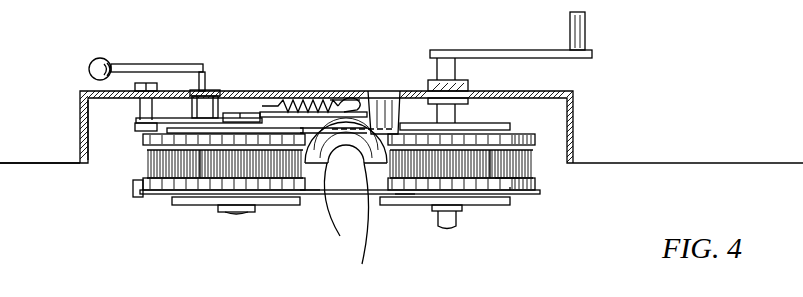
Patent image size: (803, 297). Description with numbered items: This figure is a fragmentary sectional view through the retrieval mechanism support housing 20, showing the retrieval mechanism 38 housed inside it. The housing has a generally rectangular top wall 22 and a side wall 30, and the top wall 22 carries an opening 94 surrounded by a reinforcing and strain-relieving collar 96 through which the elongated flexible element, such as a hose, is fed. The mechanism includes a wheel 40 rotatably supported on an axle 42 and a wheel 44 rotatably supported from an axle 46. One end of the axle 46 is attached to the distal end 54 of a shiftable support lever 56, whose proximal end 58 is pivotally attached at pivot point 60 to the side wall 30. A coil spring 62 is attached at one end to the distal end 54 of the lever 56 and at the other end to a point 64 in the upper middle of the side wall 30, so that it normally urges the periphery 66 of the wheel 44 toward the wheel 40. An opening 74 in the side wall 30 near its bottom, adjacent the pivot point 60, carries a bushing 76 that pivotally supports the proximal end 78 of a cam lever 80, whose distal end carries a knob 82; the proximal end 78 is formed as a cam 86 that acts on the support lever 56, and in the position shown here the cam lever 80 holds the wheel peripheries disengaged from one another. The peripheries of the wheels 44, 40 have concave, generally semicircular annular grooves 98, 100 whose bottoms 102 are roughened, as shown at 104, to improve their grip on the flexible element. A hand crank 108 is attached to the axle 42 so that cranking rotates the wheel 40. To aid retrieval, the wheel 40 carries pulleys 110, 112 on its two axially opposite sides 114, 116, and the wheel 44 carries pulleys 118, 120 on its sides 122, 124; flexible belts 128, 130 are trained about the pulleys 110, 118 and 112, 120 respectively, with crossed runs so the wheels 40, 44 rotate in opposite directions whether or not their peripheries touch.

The retrieval mechanism support housing 20 is at (578, 146).
The top wall 22 is at (381, 133).
The side wall 30 is at (88, 90).
The retrieval mechanism 38 is at (94, 188).
The wheel 40 is at (371, 192).
The axle 42 is at (449, 118).
The wheel 44 is at (155, 197).
The axle 46 is at (238, 212).
The distal end 54 is at (285, 134).
The shiftable support lever 56 is at (268, 111).
The proximal end 58 is at (181, 136).
The pivot point 60 is at (124, 109).
The coil spring 62 is at (322, 111).
The point 64 is at (347, 120).
The periphery 66 is at (170, 194).
The opening 74 is at (217, 108).
The bushing 76 is at (236, 138).
The proximal end 78 is at (203, 64).
The cam lever 80 is at (138, 63).
The knob 82 is at (95, 58).
The cam 86 is at (245, 120).
The opening 94 is at (339, 207).
The reinforcing and strain-relieving collar 96 is at (355, 221).
The annular groove 98 is at (136, 183).
The annular groove 100 is at (538, 165).
The groove bottoms 102 is at (157, 163).
The roughening 104 is at (207, 168).
The hand crank 108 is at (502, 40).
The pulley 110 is at (497, 123).
The pulley 112 is at (518, 187).
The side 114 is at (511, 136).
The side 116 is at (495, 178).
The pulley 118 is at (166, 124).
The pulley 120 is at (208, 212).
The side 122 is at (306, 134).
The side 124 is at (310, 194).
The flexible belt 128 is at (405, 130).
The flexible belt 130 is at (402, 194).